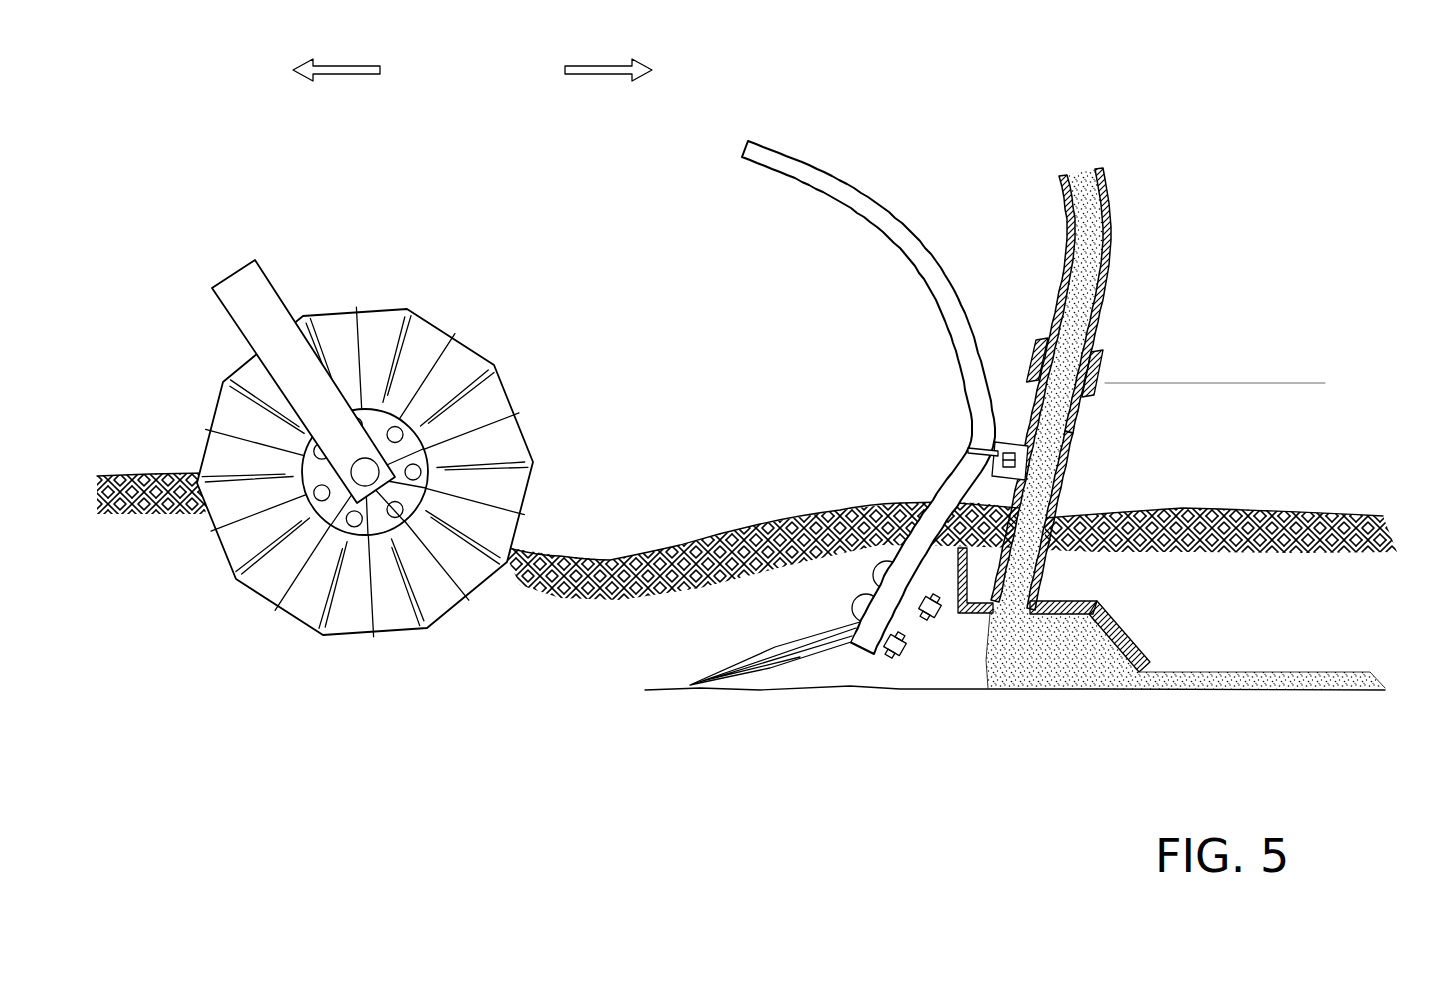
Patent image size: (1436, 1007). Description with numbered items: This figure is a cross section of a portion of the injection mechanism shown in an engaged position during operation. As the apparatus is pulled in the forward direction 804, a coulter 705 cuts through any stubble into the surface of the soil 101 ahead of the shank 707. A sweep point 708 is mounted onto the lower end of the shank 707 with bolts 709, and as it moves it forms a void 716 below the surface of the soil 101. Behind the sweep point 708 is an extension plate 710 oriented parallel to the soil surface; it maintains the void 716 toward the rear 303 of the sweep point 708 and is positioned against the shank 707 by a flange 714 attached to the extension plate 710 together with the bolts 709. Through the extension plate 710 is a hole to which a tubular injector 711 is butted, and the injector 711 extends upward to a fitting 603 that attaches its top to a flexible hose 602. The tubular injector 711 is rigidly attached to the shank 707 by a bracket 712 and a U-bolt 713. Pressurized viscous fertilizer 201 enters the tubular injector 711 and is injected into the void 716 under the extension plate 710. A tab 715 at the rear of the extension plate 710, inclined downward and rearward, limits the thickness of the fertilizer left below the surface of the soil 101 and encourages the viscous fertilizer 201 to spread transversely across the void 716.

The forward direction 804 is at (365, 70).
The rearward direction 303 is at (581, 70).
The viscous fertilizer 201 is at (1096, 359).
The shank 707 is at (875, 238).
The flexible hose 602 is at (1112, 289).
The bracket 712 is at (1013, 437).
The fitting 603 is at (1102, 381).
The U-bolt 713 is at (969, 450).
The tubular injector 711 is at (1070, 477).
The soil 101 is at (752, 528).
The coulter 705 is at (300, 608).
The bolts 709 is at (840, 598).
The extension plate 710 is at (1065, 602).
The tab 715 is at (1123, 637).
The sweep point 708 is at (797, 663).
The flange 714 is at (867, 657).
The void 716 is at (943, 670).